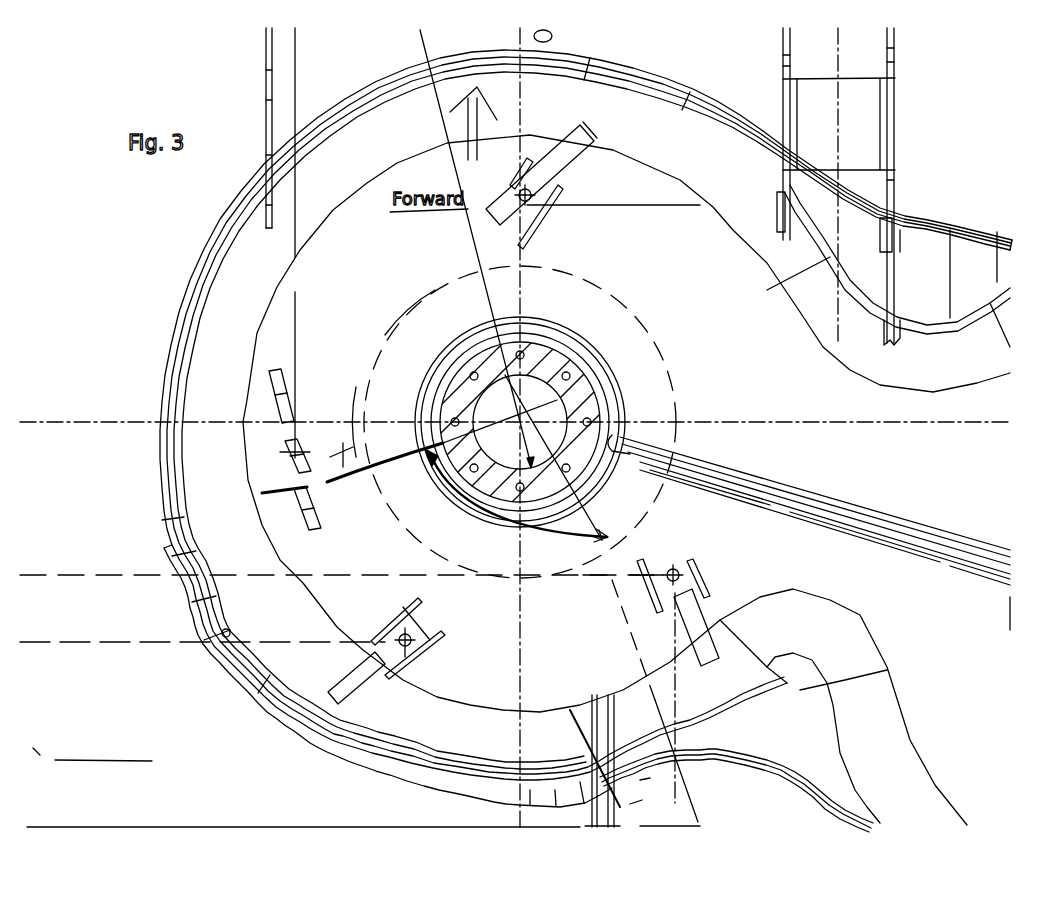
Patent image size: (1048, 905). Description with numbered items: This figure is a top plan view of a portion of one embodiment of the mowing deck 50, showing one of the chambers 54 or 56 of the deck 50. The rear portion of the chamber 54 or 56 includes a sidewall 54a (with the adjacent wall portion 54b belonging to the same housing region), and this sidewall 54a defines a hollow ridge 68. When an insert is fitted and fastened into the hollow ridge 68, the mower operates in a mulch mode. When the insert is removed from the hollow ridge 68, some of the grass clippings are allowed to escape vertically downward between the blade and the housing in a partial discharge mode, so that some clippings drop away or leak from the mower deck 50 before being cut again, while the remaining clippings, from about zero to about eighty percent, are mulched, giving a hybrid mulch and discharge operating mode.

The deck 50 is at (155, 287).
The chamber 54 is at (263, 325).
The chamber 56 is at (244, 340).
The sidewall 54a is at (278, 713).
The second housing part 54b is at (240, 740).
The hollow ridge 68 is at (420, 723).